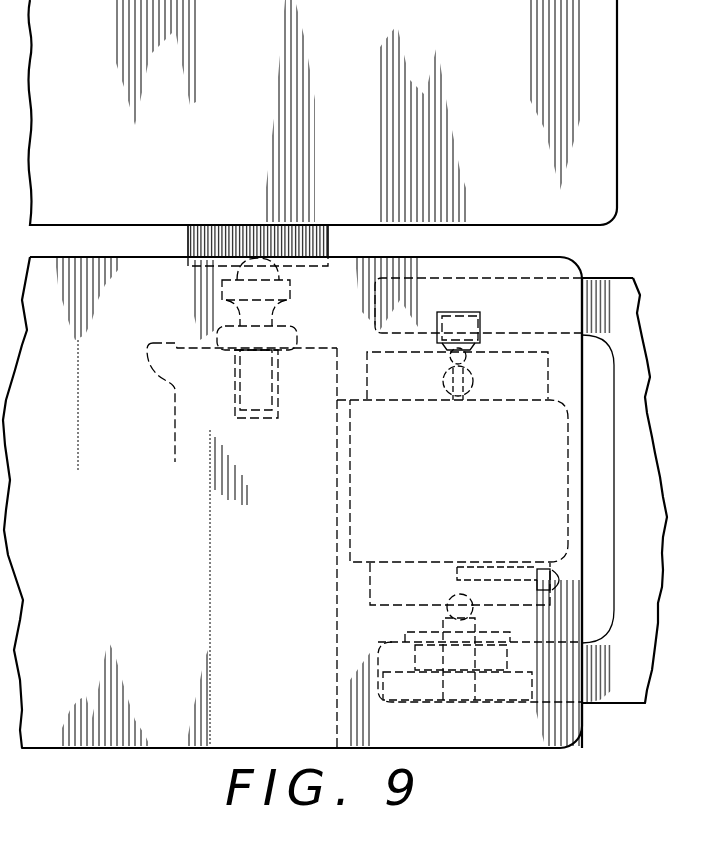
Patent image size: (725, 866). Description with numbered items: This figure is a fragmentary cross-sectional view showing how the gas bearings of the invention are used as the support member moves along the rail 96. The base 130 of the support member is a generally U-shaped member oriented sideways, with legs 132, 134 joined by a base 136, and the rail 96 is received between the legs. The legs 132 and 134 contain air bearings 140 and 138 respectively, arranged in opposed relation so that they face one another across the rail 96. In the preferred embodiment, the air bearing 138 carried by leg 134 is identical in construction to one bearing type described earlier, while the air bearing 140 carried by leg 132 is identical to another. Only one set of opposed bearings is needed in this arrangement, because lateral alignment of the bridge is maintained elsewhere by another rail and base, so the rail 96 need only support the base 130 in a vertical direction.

The rail 96 is at (466, 478).
The base of support member 130 is at (620, 278).
The leg 132 is at (505, 276).
The leg 134 is at (432, 702).
The base 136 is at (647, 598).
The air bearing 138 is at (370, 578).
The air bearing 140 is at (365, 352).